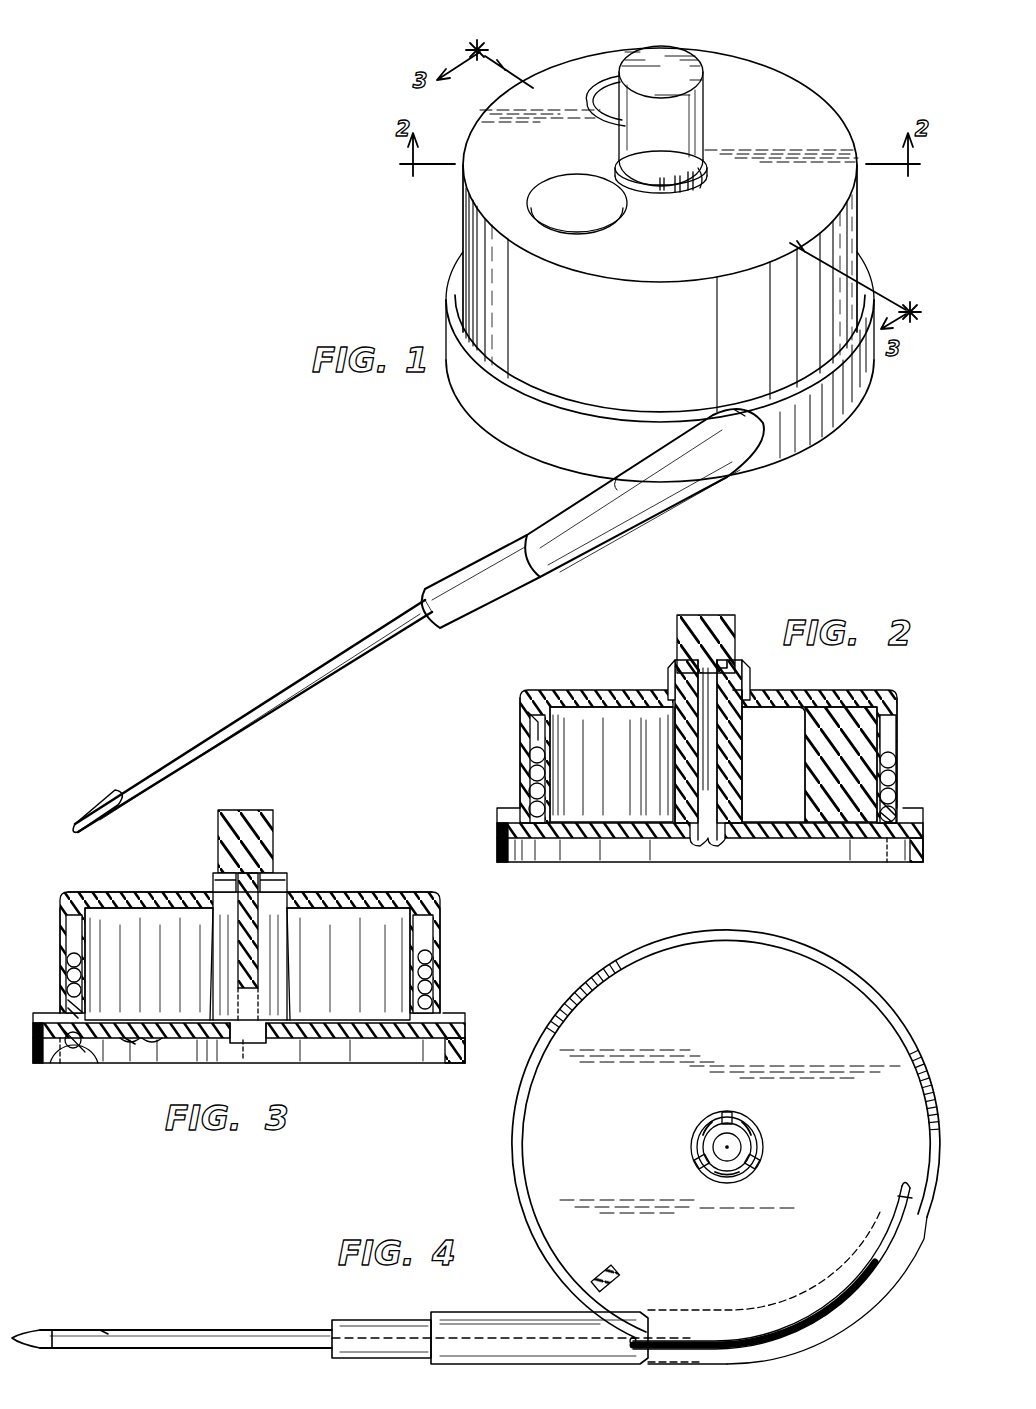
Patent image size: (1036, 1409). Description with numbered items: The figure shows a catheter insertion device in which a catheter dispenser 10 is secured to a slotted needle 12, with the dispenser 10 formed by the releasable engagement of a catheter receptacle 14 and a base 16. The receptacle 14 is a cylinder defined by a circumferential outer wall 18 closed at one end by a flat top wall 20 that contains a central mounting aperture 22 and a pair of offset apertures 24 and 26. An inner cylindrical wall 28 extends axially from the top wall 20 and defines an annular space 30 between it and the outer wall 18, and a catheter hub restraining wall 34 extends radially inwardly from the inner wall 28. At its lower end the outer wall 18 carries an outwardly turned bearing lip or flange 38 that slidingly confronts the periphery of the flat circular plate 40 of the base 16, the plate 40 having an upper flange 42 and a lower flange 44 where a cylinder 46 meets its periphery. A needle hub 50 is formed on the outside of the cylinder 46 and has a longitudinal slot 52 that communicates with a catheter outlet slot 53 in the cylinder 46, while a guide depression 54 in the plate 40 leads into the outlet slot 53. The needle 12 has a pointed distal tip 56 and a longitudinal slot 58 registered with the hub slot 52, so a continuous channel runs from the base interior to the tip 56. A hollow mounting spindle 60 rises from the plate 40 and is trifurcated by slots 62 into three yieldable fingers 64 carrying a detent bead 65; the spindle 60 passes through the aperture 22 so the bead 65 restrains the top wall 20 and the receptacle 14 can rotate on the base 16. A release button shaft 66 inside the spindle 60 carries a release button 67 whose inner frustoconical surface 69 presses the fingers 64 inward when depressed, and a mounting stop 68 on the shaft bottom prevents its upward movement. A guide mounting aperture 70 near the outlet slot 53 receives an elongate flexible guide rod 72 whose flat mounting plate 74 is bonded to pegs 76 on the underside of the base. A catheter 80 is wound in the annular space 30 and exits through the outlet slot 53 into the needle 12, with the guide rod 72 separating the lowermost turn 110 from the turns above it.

In FIG. 1, the catheter dispenser 10 is at (790, 528).
In FIG. 3, the catheter dispenser 10 is at (384, 1108).
In FIG. 1, the hollow slotted needle 12 is at (370, 653).
In FIG. 4, the hollow slotted needle 12 is at (212, 1348).
In FIG. 1, the catheter receptacle 14 is at (818, 82).
In FIG. 2, the catheter receptacle 14 is at (893, 693).
In FIG. 3, the catheter receptacle 14 is at (440, 902).
In FIG. 1, the base 16 is at (803, 448).
In FIG. 2, the base 16 is at (818, 860).
In FIG. 3, the base 16 is at (462, 1028).
In FIG. 1, the circumferential outer wall 18 is at (828, 243).
In FIG. 2, the circumferential outer wall 18 is at (898, 748).
In FIG. 3, the circumferential outer wall 18 is at (443, 943).
In FIG. 1, the flat top wall 20 is at (835, 132).
In FIG. 2, the flat top wall 20 is at (835, 692).
In FIG. 3, the flat top wall 20 is at (355, 892).
In FIG. 1, the central mounting aperture 22 is at (662, 190).
In FIG. 2, the central mounting aperture 22 is at (743, 702).
In FIG. 3, the central mounting aperture 22 is at (280, 890).
In FIG. 1, the offset aperture 24 is at (600, 90).
In FIG. 1, the offset aperture 26 is at (533, 195).
In FIG. 2, the inner cylindrical wall 28 is at (575, 707).
In FIG. 3, the inner cylindrical wall 28 is at (430, 962).
In FIG. 2, the annular space 30 is at (532, 742).
In FIG. 2, the catheter hub restraining wall 34 is at (868, 760).
In FIG. 2, the bearing lip or flange 38 is at (905, 815).
In FIG. 3, the bearing lip or flange 38 is at (455, 1018).
In FIG. 2, the flat plate 40 is at (590, 840).
In FIG. 3, the flat plate 40 is at (342, 1040).
In FIG. 4, the flat plate 40 is at (680, 985).
In FIG. 1, the upper flange 42 is at (533, 393).
In FIG. 2, the upper flange 42 is at (497, 812).
In FIG. 3, the upper flange 42 is at (58, 1010).
In FIG. 4, the upper flange 42 is at (550, 1010).
In FIG. 1, the lower flange 44 is at (545, 465).
In FIG. 2, the lower flange 44 is at (497, 858).
In FIG. 3, the lower flange 44 is at (40, 1060).
In FIG. 1, the cylinder 46 is at (837, 387).
In FIG. 2, the cylinder 46 is at (497, 845).
In FIG. 3, the cylinder 46 is at (34, 1040).
In FIG. 1, the needle hub 50 is at (573, 537).
In FIG. 4, the needle hub 50 is at (455, 1320).
In FIG. 1, the longitudinal slot 52 is at (617, 478).
In FIG. 4, the longitudinal slot 52 is at (488, 1350).
In FIG. 1, the catheter outlet slot 53 is at (733, 410).
In FIG. 4, the catheter outlet slot 53 is at (635, 1348).
In FIG. 3, the guide depression 54 is at (85, 1058).
In FIG. 1, the pointed distal tip 56 is at (73, 828).
In FIG. 4, the pointed distal tip 56 is at (14, 1336).
In FIG. 1, the longitudinal slot 58 is at (247, 712).
In FIG. 4, the longitudinal slot 58 is at (290, 1332).
In FIG. 1, the mounting spindle 60 is at (617, 165).
In FIG. 2, the mounting spindle 60 is at (748, 818).
In FIG. 3, the mounting spindle 60 is at (270, 1040).
In FIG. 4, the mounting spindle 60 is at (763, 1152).
In FIG. 1, the longitudinally extending slots 62 is at (677, 190).
In FIG. 2, the longitudinally extending slots 62 is at (703, 722).
In FIG. 3, the longitudinally extending slots 62 is at (255, 958).
In FIG. 4, the longitudinally extending slots 62 is at (735, 1118).
In FIG. 1, the spindle fingers 64 is at (690, 182).
In FIG. 2, the spindle fingers 64 is at (677, 686).
In FIG. 3, the spindle fingers 64 is at (218, 955).
In FIG. 4, the spindle fingers 64 is at (706, 1138).
In FIG. 1, the detent bead 65 is at (702, 175).
In FIG. 2, the detent bead 65 is at (746, 690).
In FIG. 3, the detent bead 65 is at (213, 886).
In FIG. 2, the release button shaft 66 is at (708, 755).
In FIG. 1, the release button 67 is at (680, 70).
In FIG. 2, the release button 67 is at (718, 630).
In FIG. 3, the release button 67 is at (262, 830).
In FIG. 2, the mounting stop 68 is at (710, 846).
In FIG. 2, the inner frustoconical surface 69 is at (722, 665).
In FIG. 4, the guide mounting aperture 70 is at (605, 1283).
In FIG. 2, the flexible guide rod 72 is at (897, 802).
In FIG. 3, the flexible guide rod 72 is at (78, 1012).
In FIG. 4, the flexible guide rod 72 is at (882, 1248).
In FIG. 3, the mounting plate 74 is at (128, 1045).
In FIG. 3, the pegs 76 is at (150, 1045).
In FIG. 1, the catheter 80 is at (155, 773).
In FIG. 2, the catheter 80 is at (529, 770).
In FIG. 3, the catheter 80 is at (438, 980).
In FIG. 4, the catheter 80 is at (900, 1186).
In FIG. 2, the lowermost turn 110 is at (888, 855).
In FIG. 3, the lowermost turn 110 is at (64, 1062).